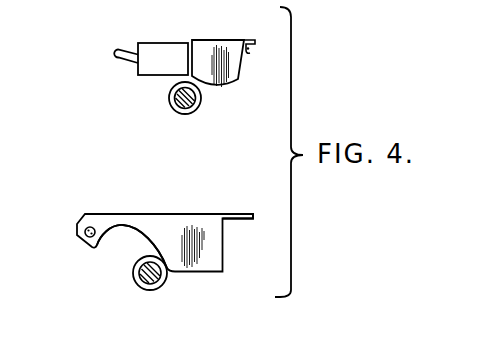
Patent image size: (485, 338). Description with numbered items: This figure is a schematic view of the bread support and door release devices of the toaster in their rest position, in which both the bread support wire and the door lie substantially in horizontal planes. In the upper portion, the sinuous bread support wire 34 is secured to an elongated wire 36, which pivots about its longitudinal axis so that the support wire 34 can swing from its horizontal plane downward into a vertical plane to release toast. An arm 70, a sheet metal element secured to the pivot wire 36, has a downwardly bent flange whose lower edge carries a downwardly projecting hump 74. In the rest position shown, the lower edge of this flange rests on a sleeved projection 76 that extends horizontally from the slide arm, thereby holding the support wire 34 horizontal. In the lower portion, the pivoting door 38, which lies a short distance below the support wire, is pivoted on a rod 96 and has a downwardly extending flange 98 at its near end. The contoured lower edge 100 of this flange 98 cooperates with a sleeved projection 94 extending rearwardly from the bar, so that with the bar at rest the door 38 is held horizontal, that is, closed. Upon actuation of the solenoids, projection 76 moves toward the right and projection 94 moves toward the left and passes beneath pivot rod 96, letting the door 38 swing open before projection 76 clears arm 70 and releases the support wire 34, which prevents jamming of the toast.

The bread support wire 34 is at (124, 48).
The arm 70 is at (162, 53).
The hump 74 is at (217, 86).
The elongated wire 36 is at (255, 46).
The sleeved projection 76 is at (169, 105).
The flange 98 is at (184, 219).
The door 38 is at (238, 213).
The rod 96 is at (85, 237).
The lower edge 100 is at (140, 237).
The sleeved projection 94 is at (166, 284).